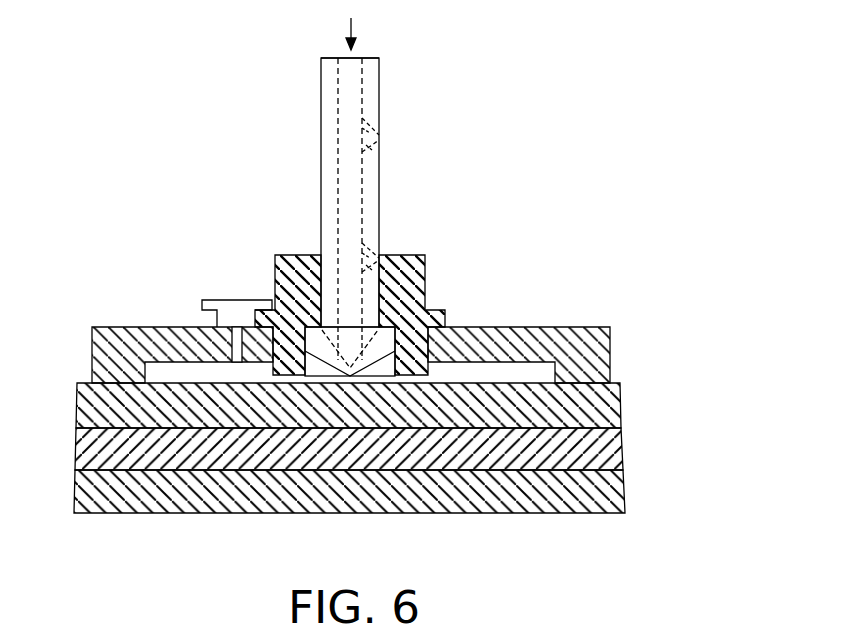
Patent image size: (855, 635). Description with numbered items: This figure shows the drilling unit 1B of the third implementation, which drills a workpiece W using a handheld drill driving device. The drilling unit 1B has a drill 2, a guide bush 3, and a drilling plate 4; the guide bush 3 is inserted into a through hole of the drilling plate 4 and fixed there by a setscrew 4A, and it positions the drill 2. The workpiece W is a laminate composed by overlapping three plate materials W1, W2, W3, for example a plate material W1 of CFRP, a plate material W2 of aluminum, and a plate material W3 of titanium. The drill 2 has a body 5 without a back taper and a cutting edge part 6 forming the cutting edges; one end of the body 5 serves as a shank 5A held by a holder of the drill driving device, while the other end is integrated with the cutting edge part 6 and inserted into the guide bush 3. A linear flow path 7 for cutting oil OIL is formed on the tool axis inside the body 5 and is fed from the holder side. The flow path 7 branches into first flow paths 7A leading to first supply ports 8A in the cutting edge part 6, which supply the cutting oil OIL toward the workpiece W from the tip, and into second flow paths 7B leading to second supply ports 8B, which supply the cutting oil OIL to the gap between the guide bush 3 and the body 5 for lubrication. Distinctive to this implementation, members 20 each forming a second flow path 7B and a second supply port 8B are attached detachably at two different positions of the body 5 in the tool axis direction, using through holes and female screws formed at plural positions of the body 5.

The drilling unit 1B is at (125, 66).
The drill 2 is at (213, 213).
The guide bush 3 is at (409, 426).
The drilling plate 4 is at (610, 345).
The setscrew 4A is at (202, 302).
The body 5 is at (321, 190).
The shank 5A is at (321, 63).
The cutting edge part 6 is at (277, 305).
The flow path 7 is at (345, 107).
The first flow path 7A is at (323, 550).
The second flow path 7B is at (380, 143).
The first supply port 8A is at (422, 550).
The second supply port 8B is at (385, 118).
The member 20 is at (385, 147).
The workpiece W is at (427, 445).
The plate material W1 is at (620, 405).
The plate material W2 is at (622, 448).
The plate material W3 is at (392, 491).
The cutting oil OIL is at (353, 31).